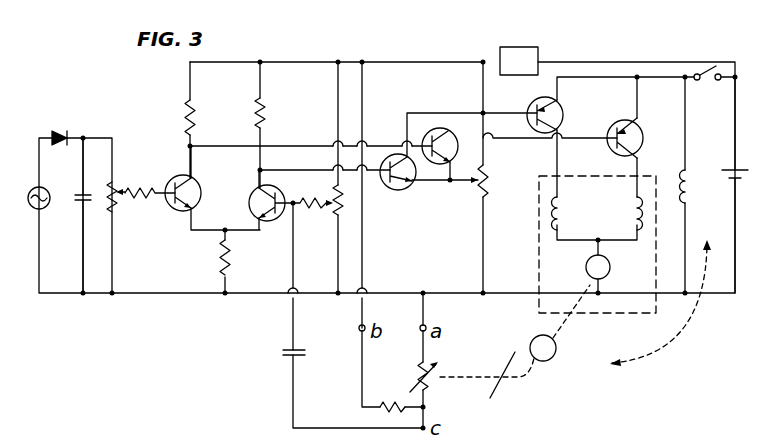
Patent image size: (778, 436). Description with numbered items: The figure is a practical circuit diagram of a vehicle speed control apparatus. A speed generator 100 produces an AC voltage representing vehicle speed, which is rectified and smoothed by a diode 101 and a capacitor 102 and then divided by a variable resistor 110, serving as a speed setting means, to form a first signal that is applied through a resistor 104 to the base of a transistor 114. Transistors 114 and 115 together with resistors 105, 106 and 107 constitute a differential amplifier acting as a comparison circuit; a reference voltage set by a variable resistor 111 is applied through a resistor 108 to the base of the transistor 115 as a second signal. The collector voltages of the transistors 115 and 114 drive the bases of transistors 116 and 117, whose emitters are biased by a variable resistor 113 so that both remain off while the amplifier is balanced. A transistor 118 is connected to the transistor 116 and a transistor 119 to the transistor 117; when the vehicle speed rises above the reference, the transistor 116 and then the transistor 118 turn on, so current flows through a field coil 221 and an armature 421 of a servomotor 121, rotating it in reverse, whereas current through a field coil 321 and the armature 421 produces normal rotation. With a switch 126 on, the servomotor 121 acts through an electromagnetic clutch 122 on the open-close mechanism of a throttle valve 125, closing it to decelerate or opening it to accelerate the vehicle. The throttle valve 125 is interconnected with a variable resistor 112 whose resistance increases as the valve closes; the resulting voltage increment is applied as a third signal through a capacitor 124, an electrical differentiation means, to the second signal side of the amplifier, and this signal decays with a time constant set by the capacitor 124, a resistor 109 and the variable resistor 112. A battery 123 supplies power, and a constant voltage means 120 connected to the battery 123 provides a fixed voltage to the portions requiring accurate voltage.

The speed generator 100 is at (48, 208).
The diode 101 is at (62, 132).
The capacitor 102 is at (80, 192).
The resistor 104 is at (148, 205).
The resistor 105 is at (195, 120).
The resistor 106 is at (265, 128).
The resistor 107 is at (230, 262).
The resistor 108 is at (312, 210).
The resistor 109 is at (390, 404).
The variable resistor 110 is at (115, 182).
The variable resistor 111 is at (345, 200).
The variable resistor 112 is at (442, 373).
The variable resistor 113 is at (488, 182).
The transistor 114 is at (200, 193).
The transistor 115 is at (250, 212).
The transistor 116 is at (405, 190).
The transistor 117 is at (437, 128).
The transistor 118 is at (563, 118).
The transistor 119 is at (643, 136).
The constant voltage means 120 is at (514, 47).
The servomotor 121 is at (597, 313).
The electromagnetic clutch 122 is at (688, 186).
The battery 123 is at (734, 169).
The capacitor 124 is at (286, 351).
The throttle valve 125 is at (500, 380).
The switch 126 is at (711, 65).
The field coil 221 is at (563, 208).
The field coil 321 is at (628, 206).
The armature 421 is at (610, 269).